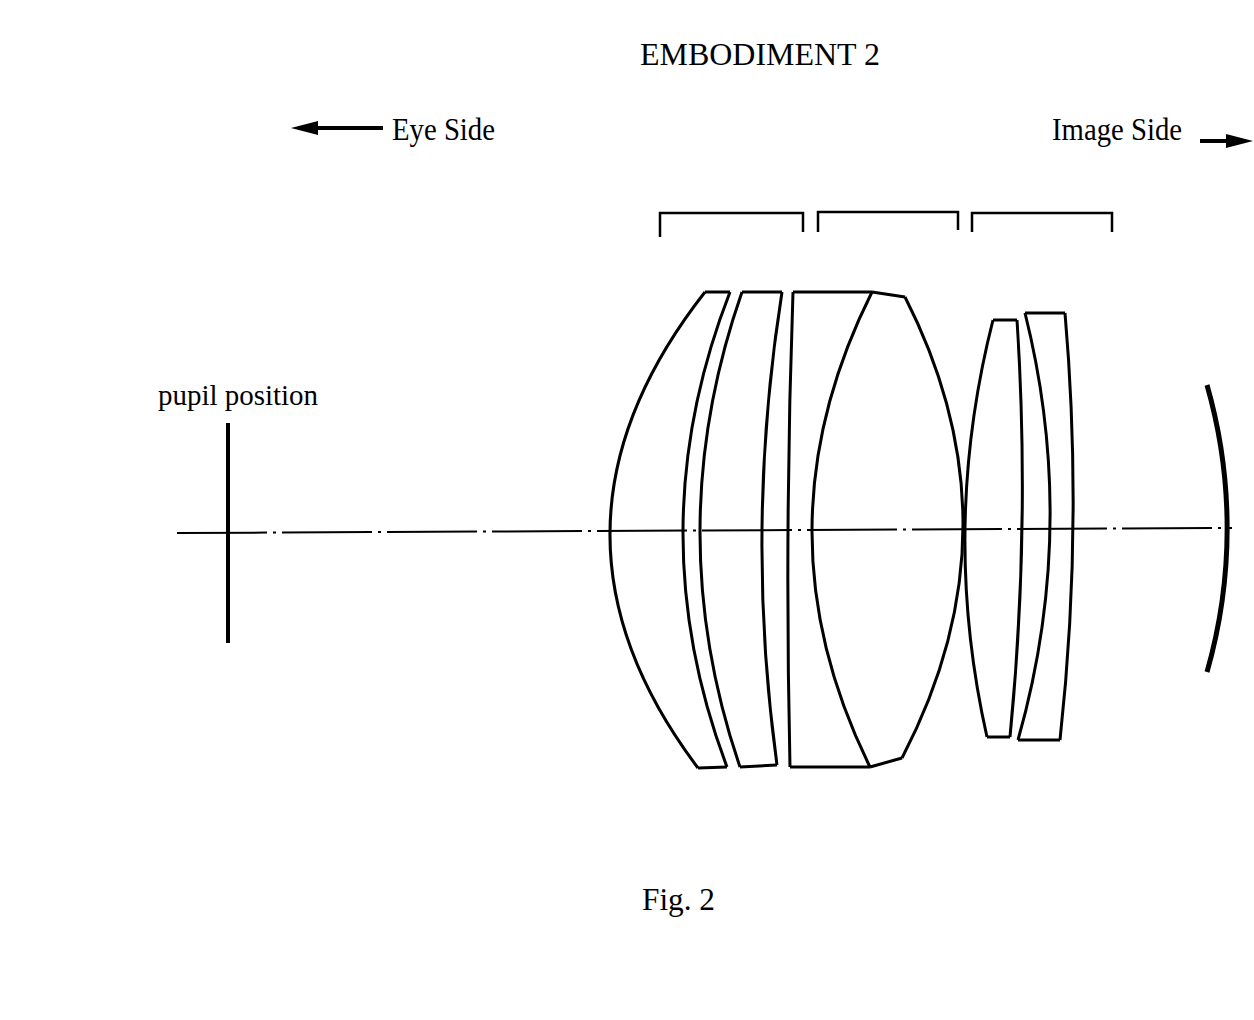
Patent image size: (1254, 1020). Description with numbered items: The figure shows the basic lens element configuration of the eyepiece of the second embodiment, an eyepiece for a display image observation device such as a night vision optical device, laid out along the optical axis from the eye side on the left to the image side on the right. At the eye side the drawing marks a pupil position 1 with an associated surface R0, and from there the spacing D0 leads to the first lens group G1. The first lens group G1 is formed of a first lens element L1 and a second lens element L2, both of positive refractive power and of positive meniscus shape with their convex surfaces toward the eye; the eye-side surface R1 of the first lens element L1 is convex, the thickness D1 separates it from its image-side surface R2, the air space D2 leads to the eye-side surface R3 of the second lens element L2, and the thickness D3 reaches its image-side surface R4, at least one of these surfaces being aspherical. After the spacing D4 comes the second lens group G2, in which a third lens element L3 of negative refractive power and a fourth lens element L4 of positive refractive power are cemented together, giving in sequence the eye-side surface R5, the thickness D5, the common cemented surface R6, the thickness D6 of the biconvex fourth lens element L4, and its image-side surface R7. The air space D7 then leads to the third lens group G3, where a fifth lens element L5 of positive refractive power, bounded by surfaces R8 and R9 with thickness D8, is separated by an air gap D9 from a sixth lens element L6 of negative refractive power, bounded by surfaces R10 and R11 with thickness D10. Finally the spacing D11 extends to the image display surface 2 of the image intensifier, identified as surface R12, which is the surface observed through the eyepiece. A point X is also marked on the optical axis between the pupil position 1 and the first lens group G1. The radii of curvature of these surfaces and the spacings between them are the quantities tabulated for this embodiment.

The pupil (eye point) position 1 is at (256, 536).
The image display surface 2 is at (1191, 528).
The first lens group G1 is at (721, 467).
The second lens group G2 is at (848, 466).
The third lens group G3 is at (1044, 453).
The first lens element L1 is at (667, 503).
The second lens element L2 is at (741, 502).
The third lens element L3 is at (818, 502).
The fourth lens element L4 is at (916, 502).
The fifth lens element L5 is at (997, 490).
The sixth lens element L6 is at (1079, 491).
The radius of curvature of eye-side reference surface R0 is at (230, 468).
The radius of curvature of eye-side surface of first lens element R1 is at (658, 352).
The radius of curvature of image-side surface of first lens element R2 is at (716, 357).
The radius of curvature of eye-side surface of second lens element R3 is at (710, 412).
The radius of curvature of image-side surface of second lens element R4 is at (777, 330).
The radius of curvature of eye-side surface of third lens element R5 is at (789, 377).
The radius of curvature of cemented surface R6 is at (844, 360).
The radius of curvature of image-side surface of fourth lens element R7 is at (918, 323).
The radius of curvature of eye-side surface of fifth lens element R8 is at (983, 360).
The radius of curvature of image-side surface of fifth lens element R9 is at (1025, 357).
The radius of curvature of eye-side surface of sixth lens element R10 is at (1033, 362).
The radius of curvature of image-side surface of sixth lens element R11 is at (1071, 392).
The radius of curvature of image display surface R12 is at (1216, 430).
The spacing from eye-side reference surface to first lens element D0 is at (378, 500).
The thickness of first lens element D1 is at (648, 528).
The spacing between first and second lens elements D2 is at (688, 543).
The thickness of second lens element D3 is at (735, 528).
The spacing between first and second lens groups D4 is at (772, 535).
The thickness of third lens element D5 is at (798, 527).
The thickness of fourth lens element D6 is at (883, 527).
The spacing between second and third lens groups D7 is at (953, 540).
The thickness of fifth lens element D8 is at (980, 527).
The spacing between fifth and sixth lens elements D9 is at (1032, 527).
The thickness of sixth lens element D10 is at (1060, 518).
The spacing from sixth lens element to image display surface D11 is at (1158, 527).
The point X on the optical axis X is at (465, 535).